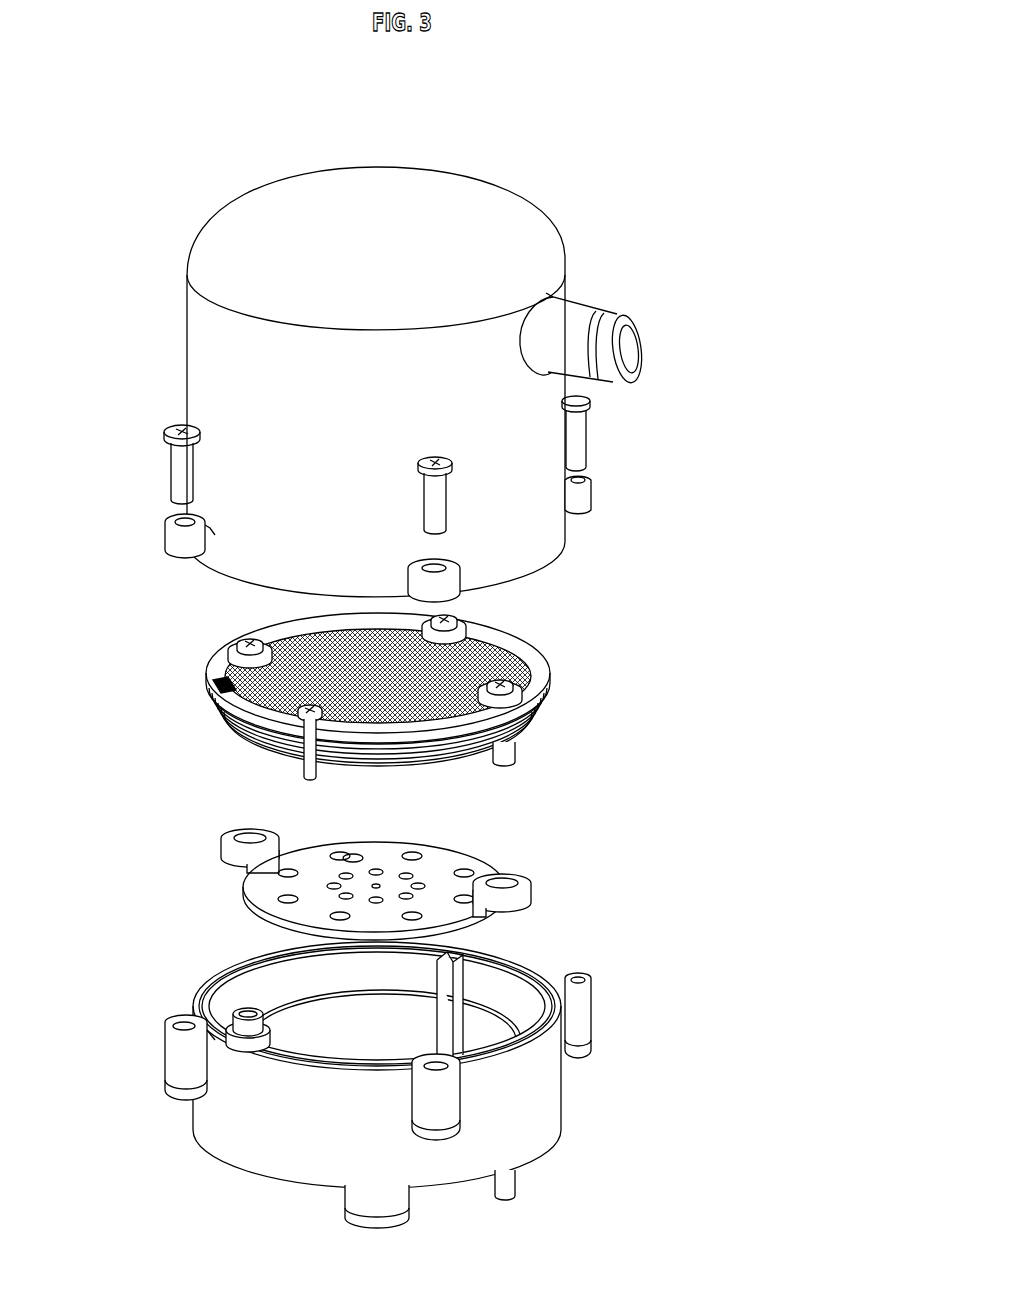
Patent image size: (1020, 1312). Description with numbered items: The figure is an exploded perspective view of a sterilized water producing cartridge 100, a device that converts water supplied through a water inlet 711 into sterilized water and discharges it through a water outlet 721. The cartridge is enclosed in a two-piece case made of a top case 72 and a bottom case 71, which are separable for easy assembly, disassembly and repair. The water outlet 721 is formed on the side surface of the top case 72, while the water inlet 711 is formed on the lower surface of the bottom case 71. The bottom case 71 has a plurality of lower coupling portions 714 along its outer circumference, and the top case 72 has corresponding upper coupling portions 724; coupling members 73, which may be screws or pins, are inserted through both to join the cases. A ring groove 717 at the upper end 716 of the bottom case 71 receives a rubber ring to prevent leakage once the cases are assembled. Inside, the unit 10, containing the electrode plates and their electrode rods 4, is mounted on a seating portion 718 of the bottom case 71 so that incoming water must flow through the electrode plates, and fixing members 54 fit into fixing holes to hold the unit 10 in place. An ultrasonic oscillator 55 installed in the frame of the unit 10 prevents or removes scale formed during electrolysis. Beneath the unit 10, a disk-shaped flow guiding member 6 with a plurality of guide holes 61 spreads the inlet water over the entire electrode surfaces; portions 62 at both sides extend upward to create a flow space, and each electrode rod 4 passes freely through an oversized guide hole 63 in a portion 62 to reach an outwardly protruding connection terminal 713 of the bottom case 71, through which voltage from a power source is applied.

The sterilized water producing cartridge 100 is at (625, 215).
The top case 72 is at (187, 333).
The water outlet 721 is at (586, 302).
The coupling members 73 is at (170, 470).
The upper coupling portions 724 is at (165, 537).
The unit 10 is at (548, 665).
The ultrasonic oscillator 55 is at (213, 685).
The fixing members 54 is at (302, 770).
The electrode rods 4 is at (516, 757).
The flow guiding member 6 is at (438, 871).
The guide holes 61 is at (353, 858).
The guide hole 63 is at (505, 882).
The portions 62 is at (532, 885).
The seating portion 718 is at (290, 1003).
The ring groove 717 is at (200, 995).
The upper end 716 is at (195, 1003).
The lower coupling portions 714 is at (165, 1056).
The bottom case 71 is at (345, 1079).
The connection terminals 713 is at (516, 1188).
The water inlet 711 is at (345, 1218).